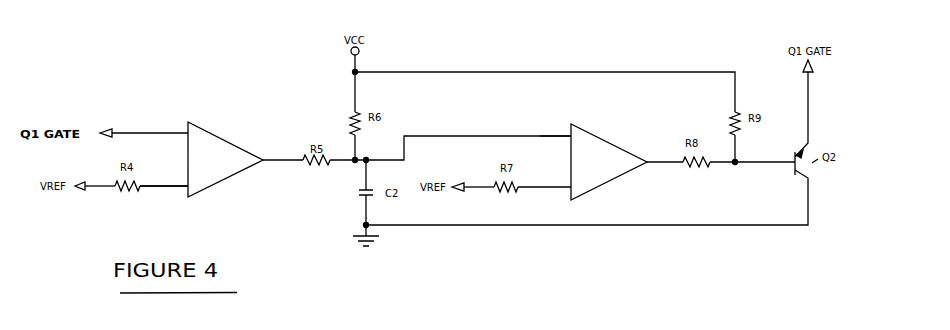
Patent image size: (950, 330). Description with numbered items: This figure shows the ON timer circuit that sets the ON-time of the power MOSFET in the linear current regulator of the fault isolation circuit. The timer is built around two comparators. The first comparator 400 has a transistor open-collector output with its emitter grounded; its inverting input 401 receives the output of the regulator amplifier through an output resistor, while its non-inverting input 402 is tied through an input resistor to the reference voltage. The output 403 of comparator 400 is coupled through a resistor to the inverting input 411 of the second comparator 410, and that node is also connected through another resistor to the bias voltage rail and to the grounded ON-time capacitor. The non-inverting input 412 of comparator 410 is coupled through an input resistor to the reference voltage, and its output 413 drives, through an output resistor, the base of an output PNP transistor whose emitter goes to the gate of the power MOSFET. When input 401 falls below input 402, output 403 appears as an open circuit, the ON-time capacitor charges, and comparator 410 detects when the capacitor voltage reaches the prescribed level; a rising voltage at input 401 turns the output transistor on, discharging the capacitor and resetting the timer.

The comparator 400 is at (217, 135).
The inverting input of comparator 400 401 is at (188, 125).
The non-inverting input of comparator 400 402 is at (188, 196).
The output of comparator 400 403 is at (265, 163).
The comparator 410 is at (600, 135).
The inverting input of comparator 410 411 is at (563, 137).
The non-inverting input of comparator 410 412 is at (571, 198).
The output of comparator 410 413 is at (650, 165).